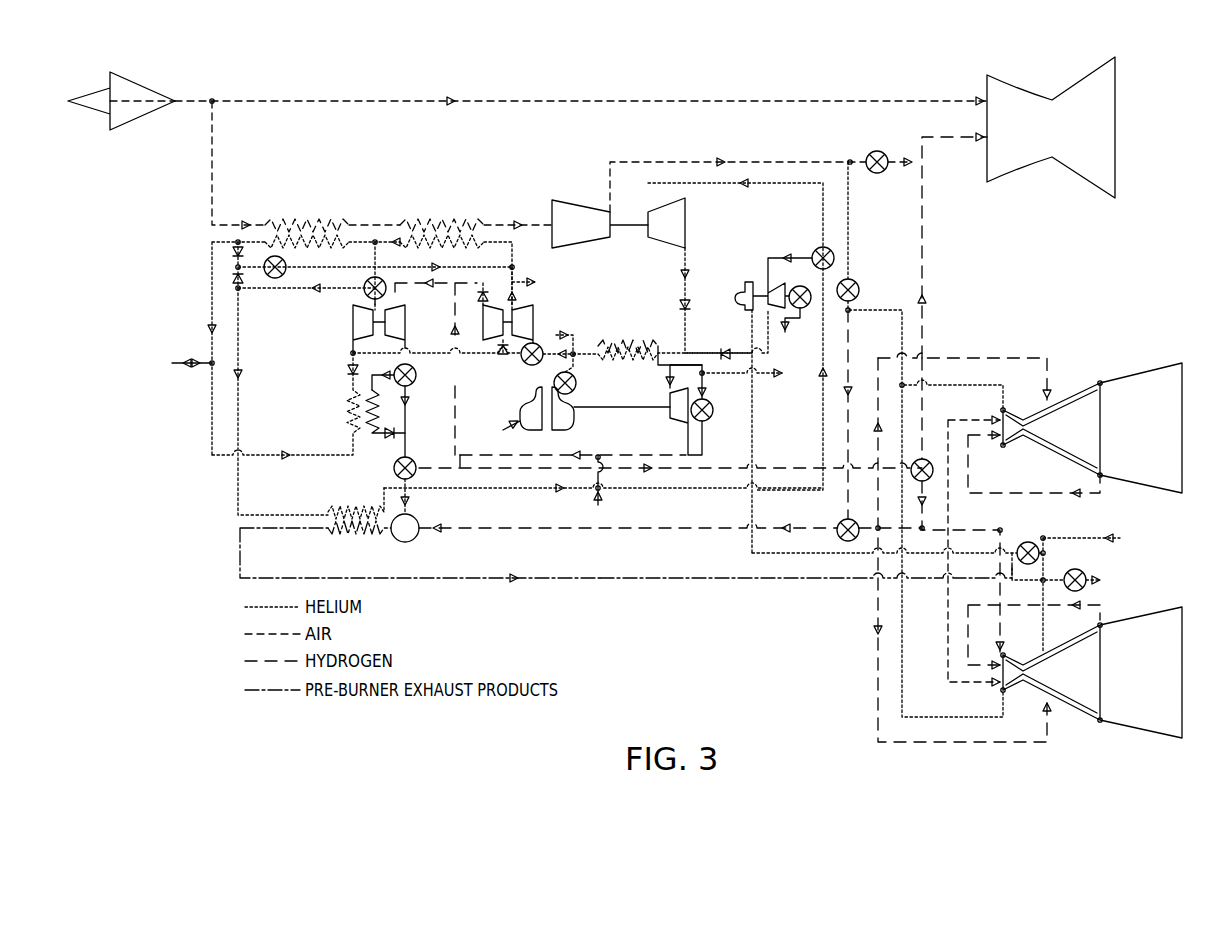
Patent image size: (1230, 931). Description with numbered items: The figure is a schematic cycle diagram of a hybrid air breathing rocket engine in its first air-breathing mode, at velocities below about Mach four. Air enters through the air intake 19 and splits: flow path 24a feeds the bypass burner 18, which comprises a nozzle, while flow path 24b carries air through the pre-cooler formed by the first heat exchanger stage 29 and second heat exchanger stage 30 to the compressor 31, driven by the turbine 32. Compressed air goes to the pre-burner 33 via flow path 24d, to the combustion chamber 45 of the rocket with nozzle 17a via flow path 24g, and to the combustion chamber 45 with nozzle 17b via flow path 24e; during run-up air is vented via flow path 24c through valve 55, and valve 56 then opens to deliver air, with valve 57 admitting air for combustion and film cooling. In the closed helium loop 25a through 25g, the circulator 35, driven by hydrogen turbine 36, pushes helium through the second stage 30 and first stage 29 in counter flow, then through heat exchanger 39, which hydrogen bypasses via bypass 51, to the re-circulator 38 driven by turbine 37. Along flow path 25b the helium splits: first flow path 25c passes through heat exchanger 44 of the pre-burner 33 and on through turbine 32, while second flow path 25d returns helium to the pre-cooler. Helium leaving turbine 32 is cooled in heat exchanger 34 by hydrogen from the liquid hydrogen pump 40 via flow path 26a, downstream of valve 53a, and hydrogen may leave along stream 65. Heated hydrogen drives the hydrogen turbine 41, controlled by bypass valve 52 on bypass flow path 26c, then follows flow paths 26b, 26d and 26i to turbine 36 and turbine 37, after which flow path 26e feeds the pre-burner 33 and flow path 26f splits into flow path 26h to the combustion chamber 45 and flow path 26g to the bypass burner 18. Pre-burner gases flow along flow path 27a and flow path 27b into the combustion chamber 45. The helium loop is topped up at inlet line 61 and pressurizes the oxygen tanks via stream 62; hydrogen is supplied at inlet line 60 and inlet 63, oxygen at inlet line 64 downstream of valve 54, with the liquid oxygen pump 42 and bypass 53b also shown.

The rocket nozzle 17a is at (1125, 385).
The rocket nozzle 17b is at (1160, 612).
The bypass burner 18 is at (1012, 78).
The air intake 19 is at (130, 128).
The flow path 24a is at (541, 95).
The flow path 24b is at (214, 158).
The flow path 24c is at (860, 158).
The flow path 24d is at (632, 576).
The flow path 24e is at (875, 600).
The flow path 24g is at (980, 355).
The helium loop flow path 25a is at (690, 258).
The flow path 25b is at (240, 288).
The first flow path 25c is at (242, 418).
The second helium flow path 25d is at (340, 275).
The helium loop flow path 25g is at (260, 462).
The flow path 26a is at (594, 380).
The flow path 26b is at (668, 440).
The bypass flow path 26c is at (704, 447).
The flow path 26d is at (500, 475).
The flow path 26e is at (420, 500).
The flow path 26f is at (440, 465).
The flow path 26g is at (926, 270).
The flow path 26h is at (926, 585).
The flow path 26i is at (443, 367).
The flow path 27a is at (250, 560).
The flow path 27b is at (952, 520).
The first heat exchanger stage 29 is at (310, 220).
The second heat exchanger stage 30 is at (468, 220).
The compressor 31 is at (568, 198).
The turbine 32 is at (688, 213).
The pre-burner 33 is at (419, 531).
The heat exchanger 34 is at (622, 343).
The circulator 35 is at (533, 310).
The hydrogen turbine 36 is at (483, 322).
The hydrogen impulse turbine 37 is at (405, 322).
The re-circulator 38 is at (353, 345).
The heat exchanger 39 is at (345, 425).
The liquid hydrogen pump 40 is at (505, 427).
The hydrogen turbine 41 is at (704, 394).
The liquid oxygen pump 42 is at (738, 300).
The heat exchanger 44 is at (350, 505).
The combustion chamber 45 is at (1012, 447).
The bypass 51 is at (412, 385).
The bypass valve 52 is at (714, 413).
The valve 53a is at (553, 378).
The bypass 53b is at (811, 303).
The valve 54 is at (1035, 542).
The valve 55 is at (877, 174).
The valve 56 is at (860, 290).
The valve 57 is at (838, 525).
The inlet line 60 is at (548, 345).
The inlet line 61 is at (181, 364).
The stream 62 is at (536, 286).
The inlet 63 is at (601, 491).
The inlet line 64 is at (1094, 539).
The stream 65 is at (757, 374).